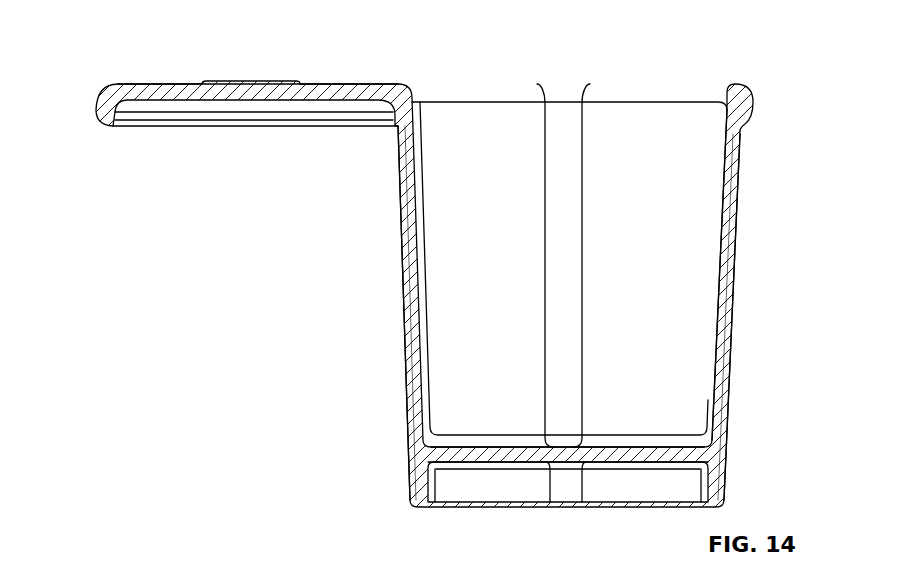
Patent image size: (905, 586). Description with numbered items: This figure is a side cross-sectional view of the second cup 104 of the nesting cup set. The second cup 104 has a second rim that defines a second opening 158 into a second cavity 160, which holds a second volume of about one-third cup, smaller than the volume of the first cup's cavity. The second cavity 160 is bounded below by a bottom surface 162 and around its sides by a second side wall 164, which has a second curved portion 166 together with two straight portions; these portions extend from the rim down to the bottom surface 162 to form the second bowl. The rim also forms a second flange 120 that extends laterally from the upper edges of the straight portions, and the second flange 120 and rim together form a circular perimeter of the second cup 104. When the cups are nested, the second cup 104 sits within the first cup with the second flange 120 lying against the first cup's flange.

The second cup 104 is at (708, 33).
The second flange 120 is at (151, 84).
The second opening 158 is at (498, 83).
The second cavity 160 is at (447, 140).
The bottom surface 162 is at (543, 449).
The second side wall 164 is at (723, 353).
The second curved portion 166 is at (733, 163).